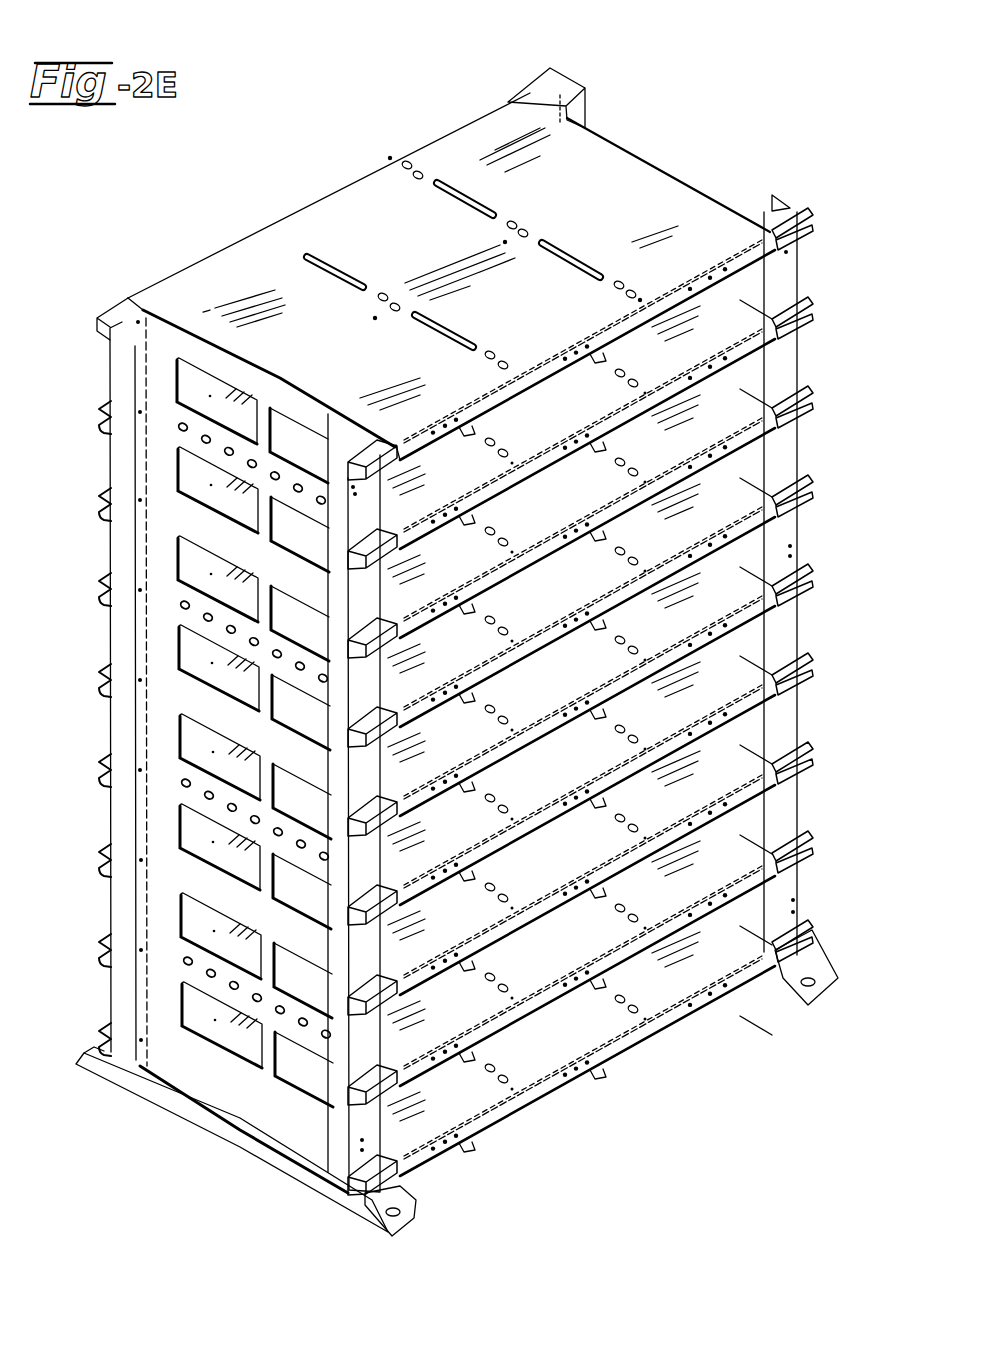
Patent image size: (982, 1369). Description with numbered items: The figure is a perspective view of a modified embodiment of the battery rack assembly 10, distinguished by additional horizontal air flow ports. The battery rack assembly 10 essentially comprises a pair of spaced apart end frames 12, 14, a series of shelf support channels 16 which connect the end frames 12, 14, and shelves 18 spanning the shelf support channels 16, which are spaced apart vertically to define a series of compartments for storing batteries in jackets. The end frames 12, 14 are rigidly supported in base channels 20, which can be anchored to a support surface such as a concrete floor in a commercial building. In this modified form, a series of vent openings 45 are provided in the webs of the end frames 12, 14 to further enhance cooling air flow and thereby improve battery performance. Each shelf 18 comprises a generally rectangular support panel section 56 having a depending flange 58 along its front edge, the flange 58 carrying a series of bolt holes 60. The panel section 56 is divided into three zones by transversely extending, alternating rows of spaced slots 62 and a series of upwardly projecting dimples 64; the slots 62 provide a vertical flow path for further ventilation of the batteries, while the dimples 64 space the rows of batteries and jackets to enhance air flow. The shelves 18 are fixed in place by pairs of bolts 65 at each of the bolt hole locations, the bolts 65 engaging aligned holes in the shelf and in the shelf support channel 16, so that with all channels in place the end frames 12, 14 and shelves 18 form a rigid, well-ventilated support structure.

The battery rack assembly 10 is at (680, 125).
The end frame 12 is at (104, 730).
The end frame 14 is at (796, 632).
The shelf support channel 16 is at (810, 213).
The shelf 18 is at (366, 200).
The base channel 20 is at (230, 1157).
The vent opening 45 is at (183, 434).
The support panel section 56 is at (225, 288).
The depending flange 58 is at (765, 277).
The bolt hole 60 is at (740, 258).
The slot 62 is at (458, 186).
The dimple 64 is at (410, 161).
The bolt 65 is at (392, 157).